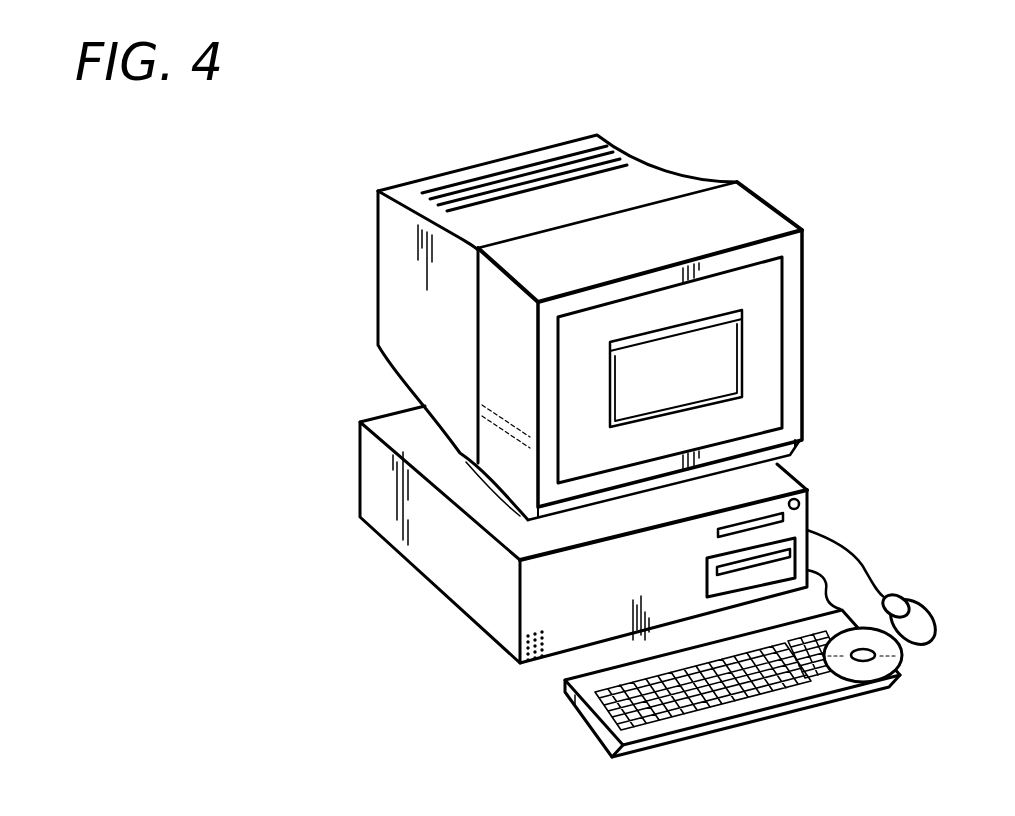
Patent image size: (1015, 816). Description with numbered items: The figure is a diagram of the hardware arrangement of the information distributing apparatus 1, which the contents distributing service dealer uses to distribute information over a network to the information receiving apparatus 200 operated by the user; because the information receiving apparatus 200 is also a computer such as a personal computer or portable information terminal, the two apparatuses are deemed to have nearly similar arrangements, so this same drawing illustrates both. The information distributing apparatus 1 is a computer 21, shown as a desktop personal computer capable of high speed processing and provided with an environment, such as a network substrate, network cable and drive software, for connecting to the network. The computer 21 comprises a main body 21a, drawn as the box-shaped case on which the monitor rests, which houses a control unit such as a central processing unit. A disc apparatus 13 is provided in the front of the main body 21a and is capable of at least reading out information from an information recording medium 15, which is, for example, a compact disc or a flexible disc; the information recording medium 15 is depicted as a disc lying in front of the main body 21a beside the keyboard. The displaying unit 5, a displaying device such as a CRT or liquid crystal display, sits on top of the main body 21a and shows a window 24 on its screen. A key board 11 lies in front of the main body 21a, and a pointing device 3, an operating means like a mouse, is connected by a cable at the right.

The information distributing apparatus 1 is at (440, 158).
The information receiving apparatus 200 is at (348, 288).
The displaying unit 5 is at (777, 207).
The window displayed on screen 24 is at (746, 358).
The computer 21 is at (345, 467).
The main body 21a is at (412, 565).
The disc apparatus 13 is at (785, 521).
The key board 11 is at (583, 722).
The information recording medium 15 is at (900, 667).
The pointing device 3 is at (933, 615).